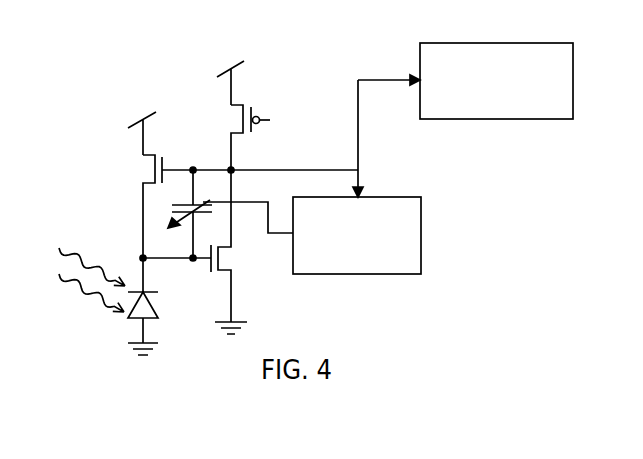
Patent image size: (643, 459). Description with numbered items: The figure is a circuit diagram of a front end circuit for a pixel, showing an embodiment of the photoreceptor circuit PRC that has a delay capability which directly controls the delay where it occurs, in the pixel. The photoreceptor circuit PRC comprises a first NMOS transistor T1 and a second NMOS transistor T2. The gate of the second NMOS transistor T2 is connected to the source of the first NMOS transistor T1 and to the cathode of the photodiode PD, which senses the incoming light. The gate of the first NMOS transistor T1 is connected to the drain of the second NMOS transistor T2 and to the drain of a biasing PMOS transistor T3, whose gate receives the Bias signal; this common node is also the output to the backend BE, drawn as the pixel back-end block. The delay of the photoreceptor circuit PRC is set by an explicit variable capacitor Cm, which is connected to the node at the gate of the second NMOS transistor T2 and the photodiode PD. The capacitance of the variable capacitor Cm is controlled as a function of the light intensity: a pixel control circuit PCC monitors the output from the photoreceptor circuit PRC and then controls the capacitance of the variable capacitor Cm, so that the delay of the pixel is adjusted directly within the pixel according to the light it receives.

The photoreceptor circuit PRC is at (123, 77).
The first NMOS transistor T1 is at (152, 171).
The second NMOS transistor T2 is at (219, 262).
The biasing PMOS transistor T3 is at (243, 124).
The bias voltage Bias is at (283, 120).
The variable capacitor Cm is at (219, 214).
The photodiode PD is at (152, 308).
The backend BE is at (496, 81).
The pixel control circuit PCC is at (357, 235).